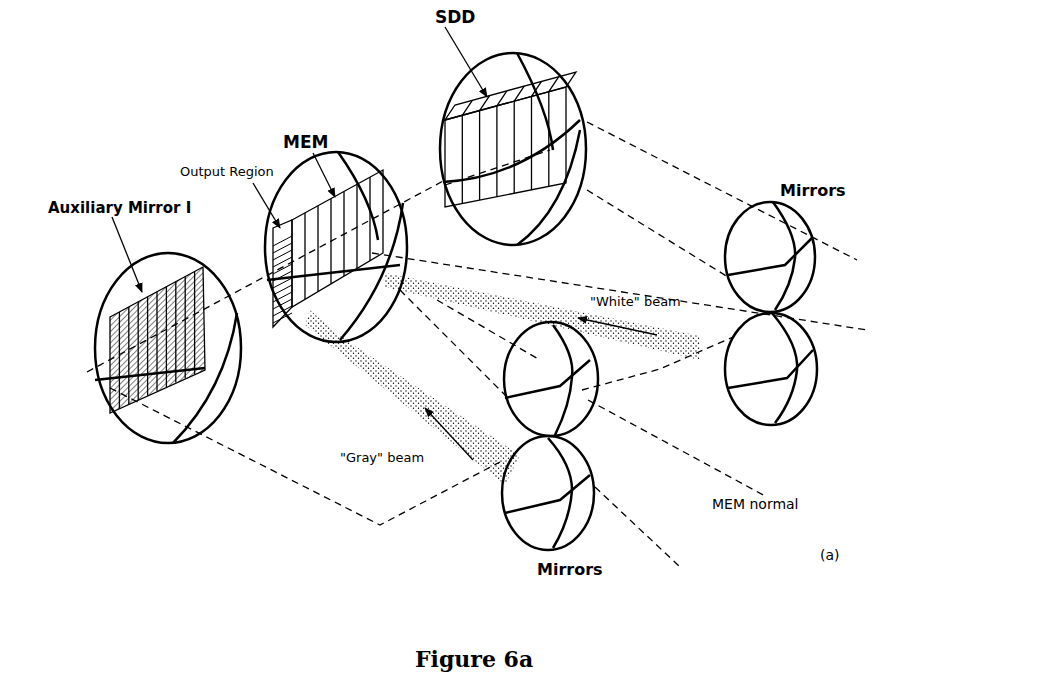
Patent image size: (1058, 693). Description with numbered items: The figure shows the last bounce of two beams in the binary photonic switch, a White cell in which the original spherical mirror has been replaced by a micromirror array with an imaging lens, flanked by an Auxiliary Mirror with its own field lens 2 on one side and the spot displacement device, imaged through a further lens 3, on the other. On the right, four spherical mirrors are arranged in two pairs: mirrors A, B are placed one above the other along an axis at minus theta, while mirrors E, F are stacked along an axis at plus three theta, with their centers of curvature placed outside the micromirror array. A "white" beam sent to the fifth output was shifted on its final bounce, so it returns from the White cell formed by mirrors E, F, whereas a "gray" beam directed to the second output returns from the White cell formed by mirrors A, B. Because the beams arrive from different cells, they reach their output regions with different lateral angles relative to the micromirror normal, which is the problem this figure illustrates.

The Lens 2 is at (165, 358).
The Lens 3 is at (530, 149).
The mirror A is at (557, 379).
The mirror B is at (559, 493).
The mirror E is at (775, 257).
The mirror F is at (778, 369).